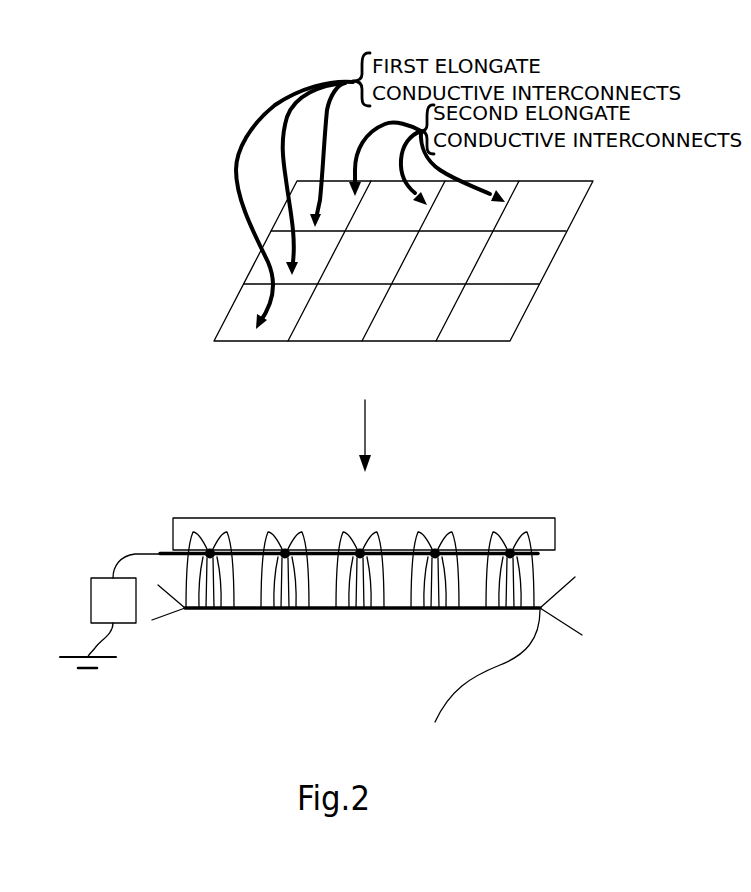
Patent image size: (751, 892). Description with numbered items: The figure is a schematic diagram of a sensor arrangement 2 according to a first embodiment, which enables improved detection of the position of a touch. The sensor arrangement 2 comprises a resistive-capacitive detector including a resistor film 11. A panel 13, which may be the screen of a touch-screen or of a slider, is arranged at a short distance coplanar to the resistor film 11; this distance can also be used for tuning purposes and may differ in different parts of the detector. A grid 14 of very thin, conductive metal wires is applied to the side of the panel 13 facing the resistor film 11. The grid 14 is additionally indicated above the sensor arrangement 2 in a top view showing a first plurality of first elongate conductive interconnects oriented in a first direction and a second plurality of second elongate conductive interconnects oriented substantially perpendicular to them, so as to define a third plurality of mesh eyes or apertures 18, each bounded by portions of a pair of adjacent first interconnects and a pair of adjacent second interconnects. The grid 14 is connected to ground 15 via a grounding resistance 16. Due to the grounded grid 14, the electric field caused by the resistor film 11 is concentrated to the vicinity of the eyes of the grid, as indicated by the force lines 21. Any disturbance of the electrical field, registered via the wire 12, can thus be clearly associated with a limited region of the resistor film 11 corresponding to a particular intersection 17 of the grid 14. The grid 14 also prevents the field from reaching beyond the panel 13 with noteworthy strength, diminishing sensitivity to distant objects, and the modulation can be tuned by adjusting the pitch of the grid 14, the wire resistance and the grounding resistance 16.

The sensor arrangement 2 is at (583, 432).
The resistor film 11 is at (324, 612).
The wire 12 is at (443, 700).
The panel 13 is at (556, 527).
The grid 14 is at (414, 394).
The ground 15 is at (64, 655).
The grounding resistance 16 is at (97, 577).
The intersection 17 is at (467, 282).
The mesh eyes or apertures 18 is at (505, 314).
The force lines 21 is at (539, 566).